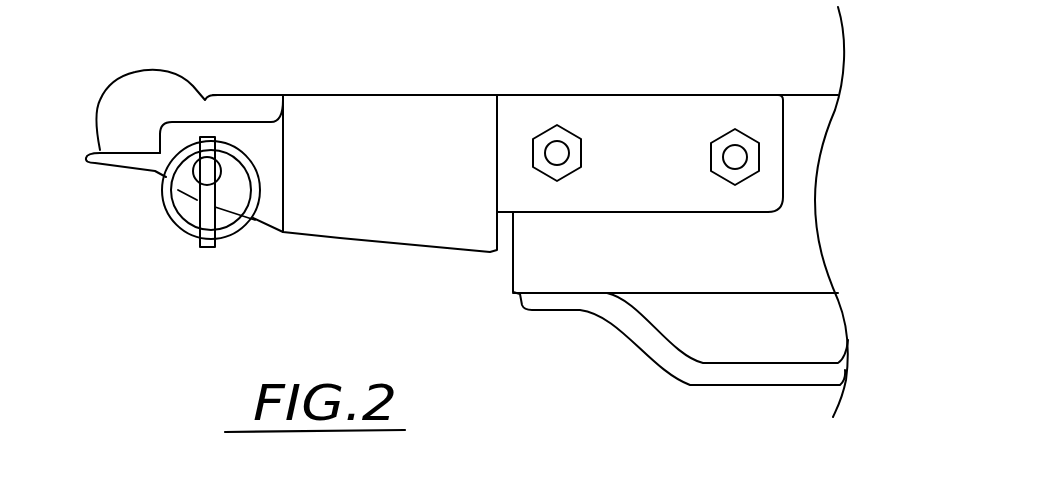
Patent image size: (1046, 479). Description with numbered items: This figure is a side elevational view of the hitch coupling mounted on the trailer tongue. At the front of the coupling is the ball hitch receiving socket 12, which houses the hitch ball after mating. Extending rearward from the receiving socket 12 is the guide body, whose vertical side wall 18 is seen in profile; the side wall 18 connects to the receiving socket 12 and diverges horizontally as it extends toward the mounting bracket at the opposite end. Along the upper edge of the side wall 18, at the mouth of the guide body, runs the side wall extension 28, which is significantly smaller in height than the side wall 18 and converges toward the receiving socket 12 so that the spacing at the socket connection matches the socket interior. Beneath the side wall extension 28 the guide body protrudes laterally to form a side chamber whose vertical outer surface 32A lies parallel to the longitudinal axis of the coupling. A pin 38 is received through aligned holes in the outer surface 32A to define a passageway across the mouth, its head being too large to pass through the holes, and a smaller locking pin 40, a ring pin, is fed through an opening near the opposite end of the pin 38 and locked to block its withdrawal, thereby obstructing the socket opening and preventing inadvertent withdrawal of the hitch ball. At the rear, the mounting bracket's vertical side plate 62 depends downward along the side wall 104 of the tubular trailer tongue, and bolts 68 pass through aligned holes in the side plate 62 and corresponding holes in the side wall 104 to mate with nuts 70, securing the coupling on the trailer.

The ball hitch receiving socket 12 is at (127, 100).
The vertical side wall 18 is at (393, 125).
The side wall extension 28 is at (245, 110).
The outer surface of side chamber 32A is at (232, 190).
The pin 38 is at (177, 218).
The locking pin 40 is at (187, 228).
The vertical side plate 62 is at (625, 123).
The bolt 68 is at (737, 156).
The nut 70 is at (728, 180).
The side wall of trailer tongue 104 is at (776, 273).